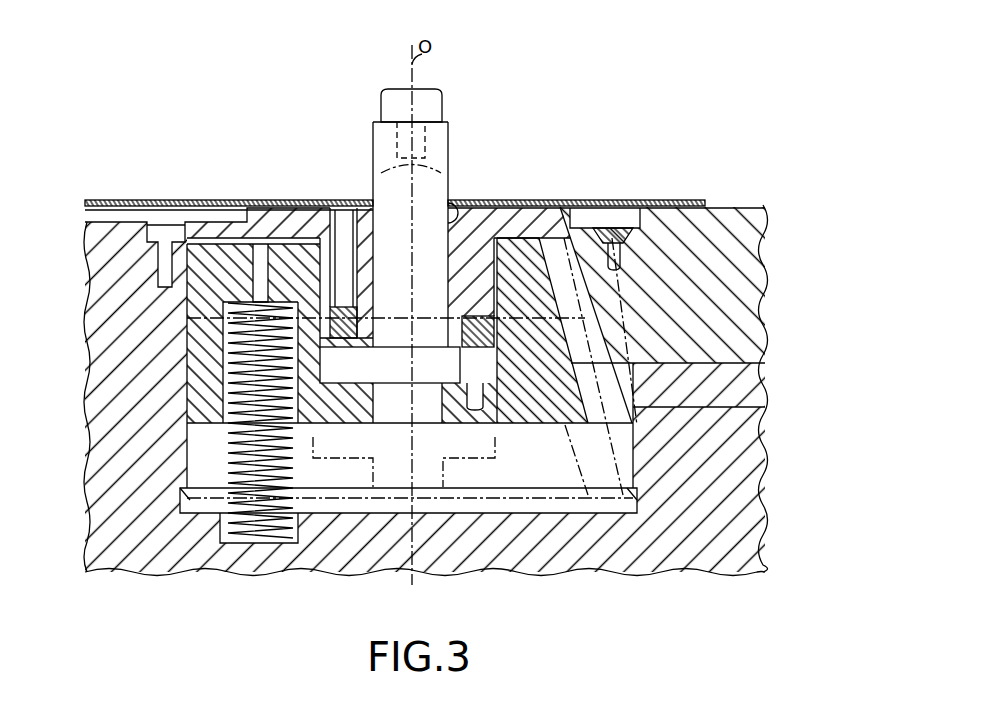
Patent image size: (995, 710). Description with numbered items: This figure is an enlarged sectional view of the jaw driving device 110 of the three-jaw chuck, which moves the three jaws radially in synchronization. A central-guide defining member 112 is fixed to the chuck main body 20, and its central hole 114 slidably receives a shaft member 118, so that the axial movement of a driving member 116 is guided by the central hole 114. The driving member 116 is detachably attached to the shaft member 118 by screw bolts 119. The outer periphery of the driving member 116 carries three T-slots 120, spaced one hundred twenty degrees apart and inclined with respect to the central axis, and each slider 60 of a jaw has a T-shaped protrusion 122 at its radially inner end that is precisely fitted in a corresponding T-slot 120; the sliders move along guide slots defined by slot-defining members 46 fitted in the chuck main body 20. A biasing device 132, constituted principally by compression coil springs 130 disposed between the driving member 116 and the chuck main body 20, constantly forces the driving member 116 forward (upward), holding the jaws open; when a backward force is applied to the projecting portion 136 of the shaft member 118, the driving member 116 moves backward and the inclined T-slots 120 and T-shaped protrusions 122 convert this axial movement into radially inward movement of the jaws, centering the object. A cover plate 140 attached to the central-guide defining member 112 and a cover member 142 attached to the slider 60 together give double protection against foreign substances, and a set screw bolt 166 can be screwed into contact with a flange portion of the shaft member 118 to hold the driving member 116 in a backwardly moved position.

The jaw driving device 110 is at (488, 129).
The central-guide defining member 112 is at (492, 201).
The central hole 114 is at (448, 203).
The driving member 116 is at (187, 413).
The shaft member 118 is at (366, 163).
The screw bolts 119 is at (505, 420).
The T-slots 120 is at (633, 422).
The T-shaped protrusion 122 is at (553, 232).
The compression coil springs 130 is at (227, 458).
The biasing device 132 is at (258, 546).
The projecting portion 136 is at (382, 142).
The cover plate 140 is at (520, 204).
The cover member 142 is at (627, 237).
The set screw bolt 166 is at (340, 228).
The chuck main body 20 is at (760, 423).
The slot-defining members 46 is at (757, 389).
The slider 60 is at (760, 298).